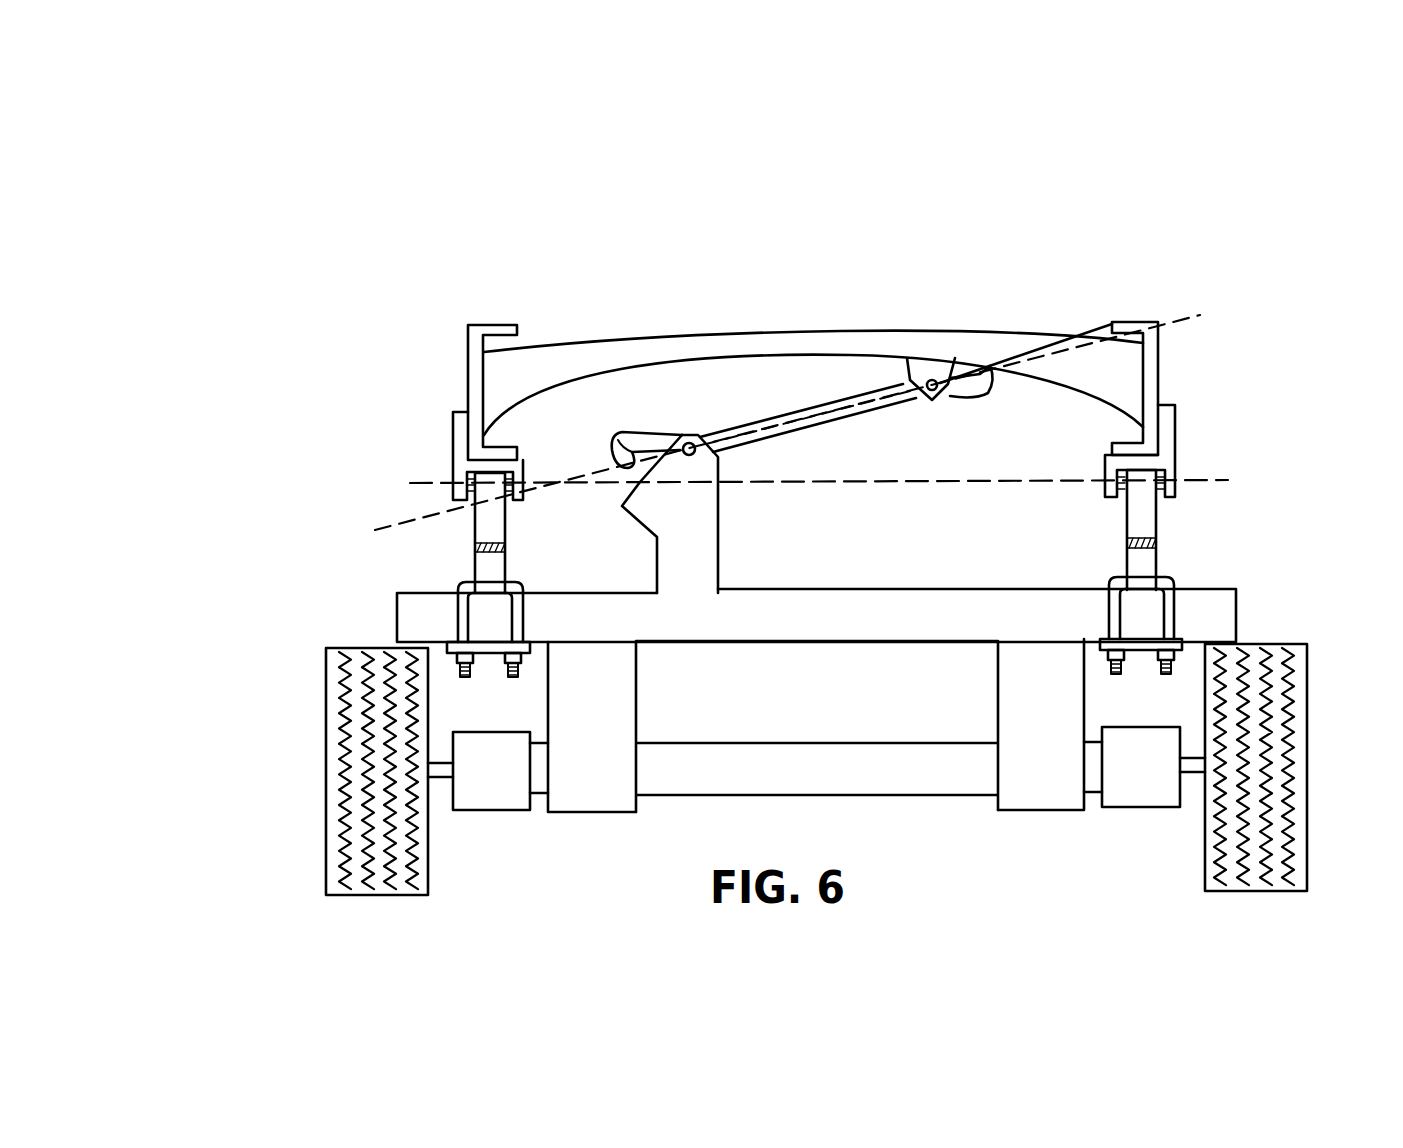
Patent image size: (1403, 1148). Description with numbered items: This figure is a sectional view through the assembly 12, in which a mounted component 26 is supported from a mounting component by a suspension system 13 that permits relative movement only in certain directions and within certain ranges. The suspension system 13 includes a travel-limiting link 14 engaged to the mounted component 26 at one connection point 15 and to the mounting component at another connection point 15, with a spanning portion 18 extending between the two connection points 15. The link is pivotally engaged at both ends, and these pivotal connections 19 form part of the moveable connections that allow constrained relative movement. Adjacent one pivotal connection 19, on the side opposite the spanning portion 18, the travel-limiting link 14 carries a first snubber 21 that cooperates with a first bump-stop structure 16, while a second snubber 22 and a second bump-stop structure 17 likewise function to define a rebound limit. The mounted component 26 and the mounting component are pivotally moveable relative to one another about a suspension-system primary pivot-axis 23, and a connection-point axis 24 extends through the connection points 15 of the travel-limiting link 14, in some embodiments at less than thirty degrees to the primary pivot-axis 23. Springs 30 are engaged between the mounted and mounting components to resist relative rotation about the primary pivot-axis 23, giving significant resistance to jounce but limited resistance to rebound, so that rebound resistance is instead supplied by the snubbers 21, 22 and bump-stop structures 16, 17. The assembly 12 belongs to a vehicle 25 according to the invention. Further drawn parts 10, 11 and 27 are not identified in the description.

The implement frame 10 is at (1160, 360).
The axle housing / cross beam 11 is at (908, 617).
The assembly 12 is at (878, 294).
The suspension system 13 is at (1188, 530).
The travel-limiting link 14 is at (886, 410).
The connection point 15 is at (683, 437).
The first bump-stop structure 16 is at (626, 518).
The second bump-stop structure 17 is at (995, 365).
The spanning portion 18 is at (817, 410).
The pivotal connection 19 is at (697, 437).
The first snubber 21 is at (617, 443).
The second snubber 22 is at (1060, 350).
The suspension-system primary pivot-axis 23 is at (1223, 482).
The connection-point axis 24 is at (778, 428).
The vehicle 25 is at (1028, 203).
The mounted component 26 is at (468, 370).
The U-bolt mounting assembly 27 is at (444, 567).
The spring 30 is at (488, 527).